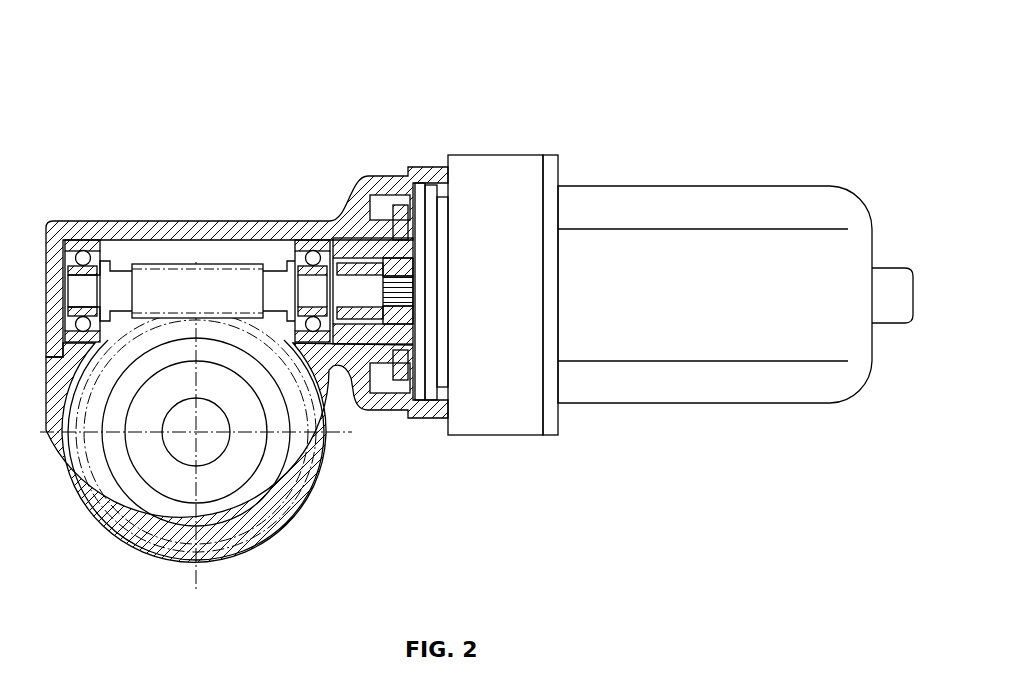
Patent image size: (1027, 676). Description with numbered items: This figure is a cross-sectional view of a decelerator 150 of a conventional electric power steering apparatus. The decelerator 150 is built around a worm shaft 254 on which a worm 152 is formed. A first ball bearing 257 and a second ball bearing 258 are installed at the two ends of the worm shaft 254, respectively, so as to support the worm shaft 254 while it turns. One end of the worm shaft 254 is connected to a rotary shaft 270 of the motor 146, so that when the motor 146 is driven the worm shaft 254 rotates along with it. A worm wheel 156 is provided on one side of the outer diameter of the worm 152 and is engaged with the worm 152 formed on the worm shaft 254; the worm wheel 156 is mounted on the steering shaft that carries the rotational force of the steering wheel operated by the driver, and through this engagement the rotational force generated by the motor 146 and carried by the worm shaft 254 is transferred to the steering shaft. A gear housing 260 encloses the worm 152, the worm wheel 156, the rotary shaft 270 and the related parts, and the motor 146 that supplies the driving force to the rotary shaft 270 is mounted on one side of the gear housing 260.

The decelerator 150 is at (447, 127).
The motor 146 is at (718, 188).
The gear housing 260 is at (387, 180).
The first ball bearing 257 is at (82, 241).
The second ball bearing 258 is at (323, 240).
The worm 152 is at (212, 264).
The worm shaft 254 is at (275, 279).
The rotary shaft 270 is at (358, 297).
The worm wheel 156 is at (310, 497).